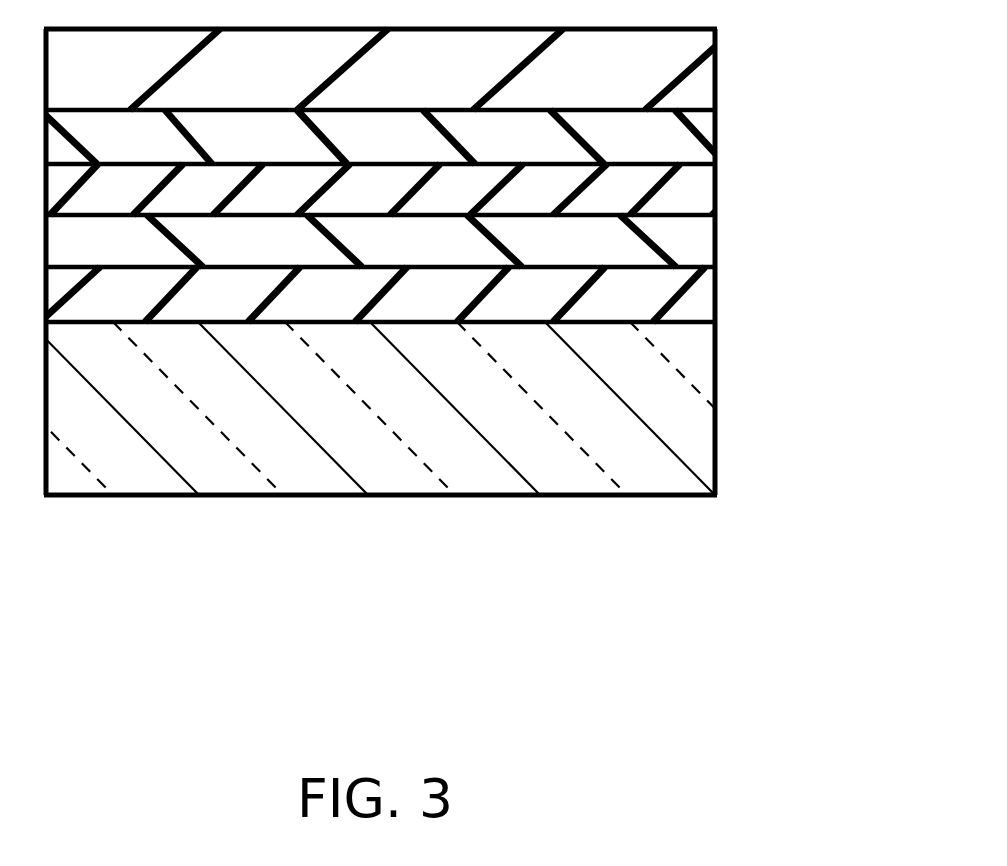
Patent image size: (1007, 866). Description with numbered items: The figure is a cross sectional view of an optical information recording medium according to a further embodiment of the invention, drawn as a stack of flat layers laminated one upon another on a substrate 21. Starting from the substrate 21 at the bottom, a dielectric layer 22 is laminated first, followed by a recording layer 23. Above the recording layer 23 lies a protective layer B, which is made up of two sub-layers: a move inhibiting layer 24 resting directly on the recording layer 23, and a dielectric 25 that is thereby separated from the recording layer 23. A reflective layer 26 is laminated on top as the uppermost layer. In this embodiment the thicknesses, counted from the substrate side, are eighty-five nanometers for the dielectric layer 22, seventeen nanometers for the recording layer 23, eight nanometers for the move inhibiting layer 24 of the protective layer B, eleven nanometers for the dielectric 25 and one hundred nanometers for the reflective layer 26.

The substrate 21 is at (683, 413).
The dielectric layer 22 is at (695, 305).
The recording layer 23 is at (688, 247).
The move inhibiting layer 24 is at (690, 200).
The dielectric 25 is at (688, 152).
The reflective layer 26 is at (697, 85).
The protective layer B is at (476, 169).